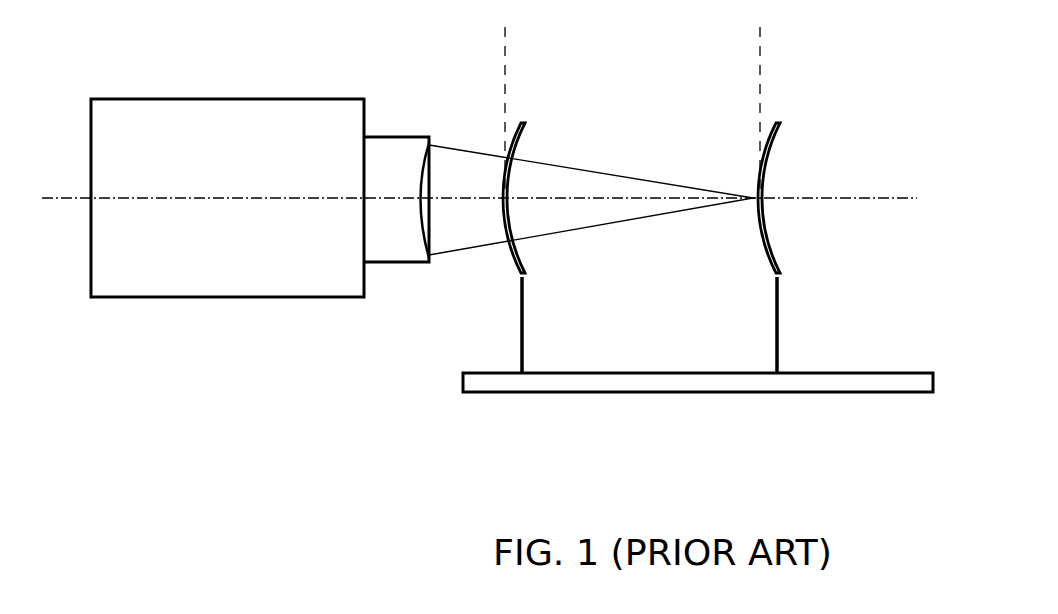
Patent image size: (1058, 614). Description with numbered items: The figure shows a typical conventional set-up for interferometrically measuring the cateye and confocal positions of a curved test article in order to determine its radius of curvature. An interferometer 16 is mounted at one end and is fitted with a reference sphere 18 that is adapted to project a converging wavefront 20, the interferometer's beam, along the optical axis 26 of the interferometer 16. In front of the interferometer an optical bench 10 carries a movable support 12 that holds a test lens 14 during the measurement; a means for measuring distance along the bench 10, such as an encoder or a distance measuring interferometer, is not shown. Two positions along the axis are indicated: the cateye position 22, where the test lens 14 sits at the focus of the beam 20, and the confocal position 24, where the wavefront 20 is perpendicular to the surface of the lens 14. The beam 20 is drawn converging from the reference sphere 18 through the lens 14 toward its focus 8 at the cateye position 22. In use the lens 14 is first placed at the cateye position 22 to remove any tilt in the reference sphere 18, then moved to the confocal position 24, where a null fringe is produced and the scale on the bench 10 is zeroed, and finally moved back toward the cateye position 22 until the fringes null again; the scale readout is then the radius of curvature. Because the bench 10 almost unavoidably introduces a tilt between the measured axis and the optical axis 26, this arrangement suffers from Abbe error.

The focal point / beam focus 8 is at (758, 200).
The optical bench 10 is at (637, 392).
The movable support 12 is at (518, 300).
The test lens 14 is at (541, 250).
The interferometer 16 is at (258, 295).
The reference sphere 18 is at (420, 190).
The converging wavefront 20 is at (600, 172).
The cateye position 22 is at (762, 82).
The confocal position 24 is at (503, 97).
The optical axis 26 is at (887, 198).